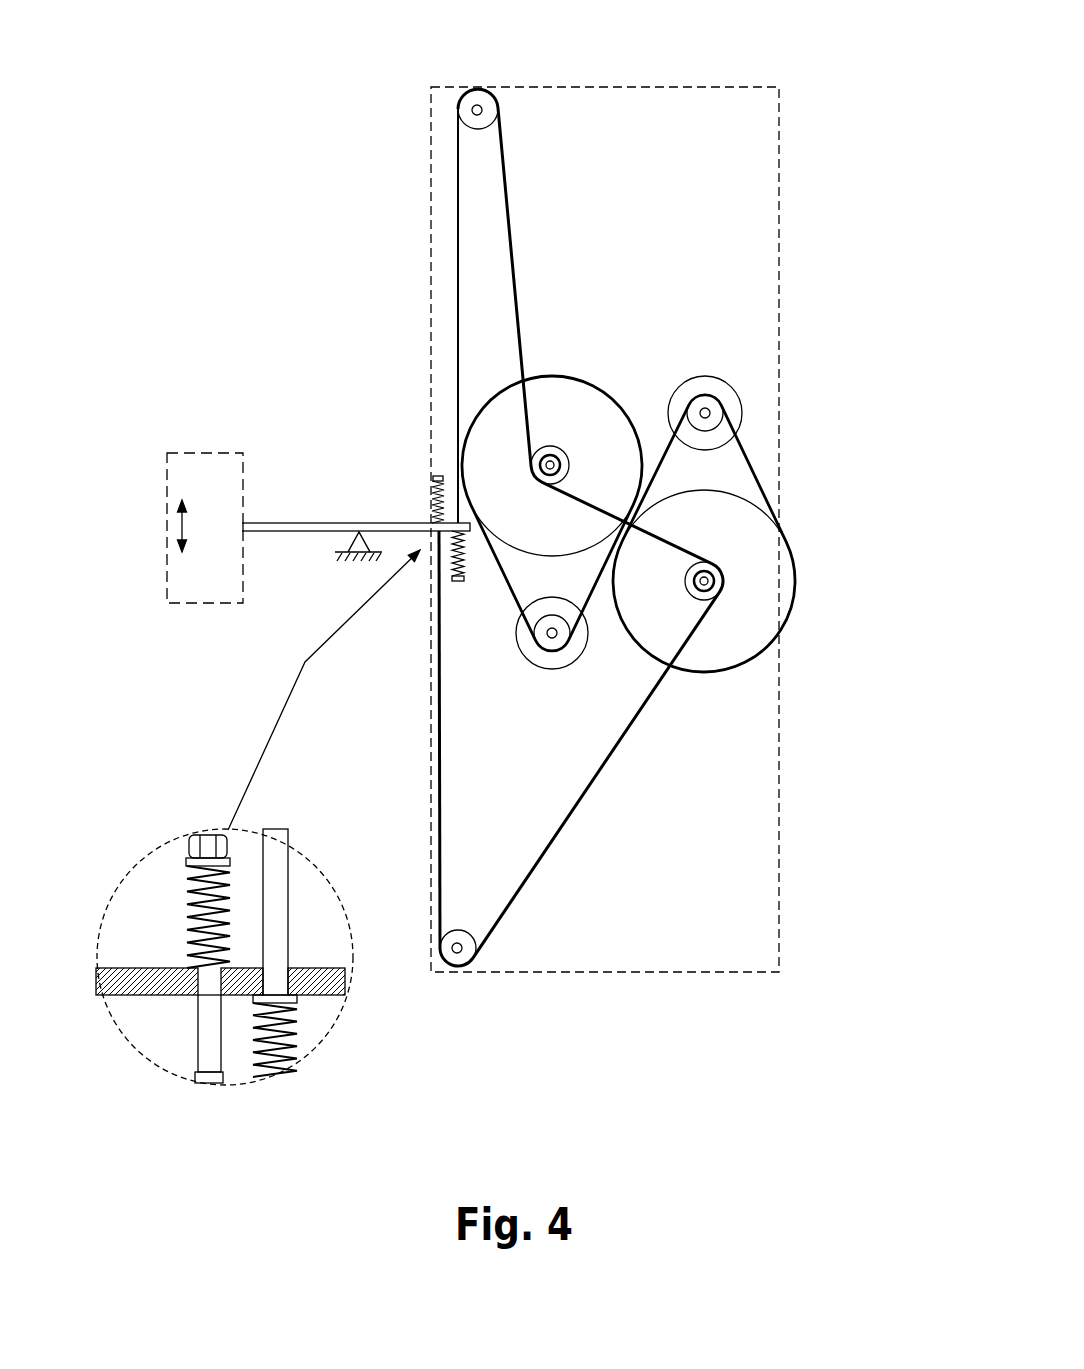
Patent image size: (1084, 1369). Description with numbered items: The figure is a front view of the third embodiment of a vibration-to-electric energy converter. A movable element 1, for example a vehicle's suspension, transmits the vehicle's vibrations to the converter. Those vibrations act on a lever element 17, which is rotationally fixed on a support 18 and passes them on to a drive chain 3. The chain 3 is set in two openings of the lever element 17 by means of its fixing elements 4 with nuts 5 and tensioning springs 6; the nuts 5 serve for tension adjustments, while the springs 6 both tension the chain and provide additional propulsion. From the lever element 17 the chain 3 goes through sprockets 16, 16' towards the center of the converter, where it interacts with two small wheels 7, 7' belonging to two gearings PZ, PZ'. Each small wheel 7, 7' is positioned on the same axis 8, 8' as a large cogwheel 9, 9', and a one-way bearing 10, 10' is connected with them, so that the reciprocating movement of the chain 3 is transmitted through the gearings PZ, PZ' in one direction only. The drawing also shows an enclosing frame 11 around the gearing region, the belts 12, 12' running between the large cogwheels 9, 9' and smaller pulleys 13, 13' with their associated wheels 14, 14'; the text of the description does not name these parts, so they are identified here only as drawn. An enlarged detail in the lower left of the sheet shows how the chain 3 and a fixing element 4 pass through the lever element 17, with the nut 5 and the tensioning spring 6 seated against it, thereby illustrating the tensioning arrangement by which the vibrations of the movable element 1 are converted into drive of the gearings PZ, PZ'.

The movable element 1 is at (223, 477).
The drive chain 3 is at (457, 282).
The fixing elements 4 is at (203, 1033).
The nuts 5 is at (205, 842).
The tensioning springs 6 is at (188, 905).
The small wheel 7 is at (550, 380).
The axis 8 is at (571, 372).
The large cogwheel 9 is at (486, 445).
The one-way bearing 10 is at (601, 375).
The frame 11 is at (684, 763).
The belt 12 is at (478, 551).
The belt pulley 13 is at (442, 695).
The belt wheel 14 is at (451, 711).
The sprocket 16 is at (408, 121).
The lever element 17 is at (314, 524).
The support 18 is at (335, 553).
The gearing PZ is at (527, 551).
The small wheel 7' is at (782, 566).
The axis 8' is at (790, 599).
The large cogwheel 9' is at (746, 581).
The one-way bearing 10' is at (799, 643).
The belt 12' is at (758, 533).
The belt pulley 13' is at (795, 403).
The belt wheel 14' is at (786, 386).
The sprocket 16' is at (491, 985).
The gearing PZ' is at (759, 519).